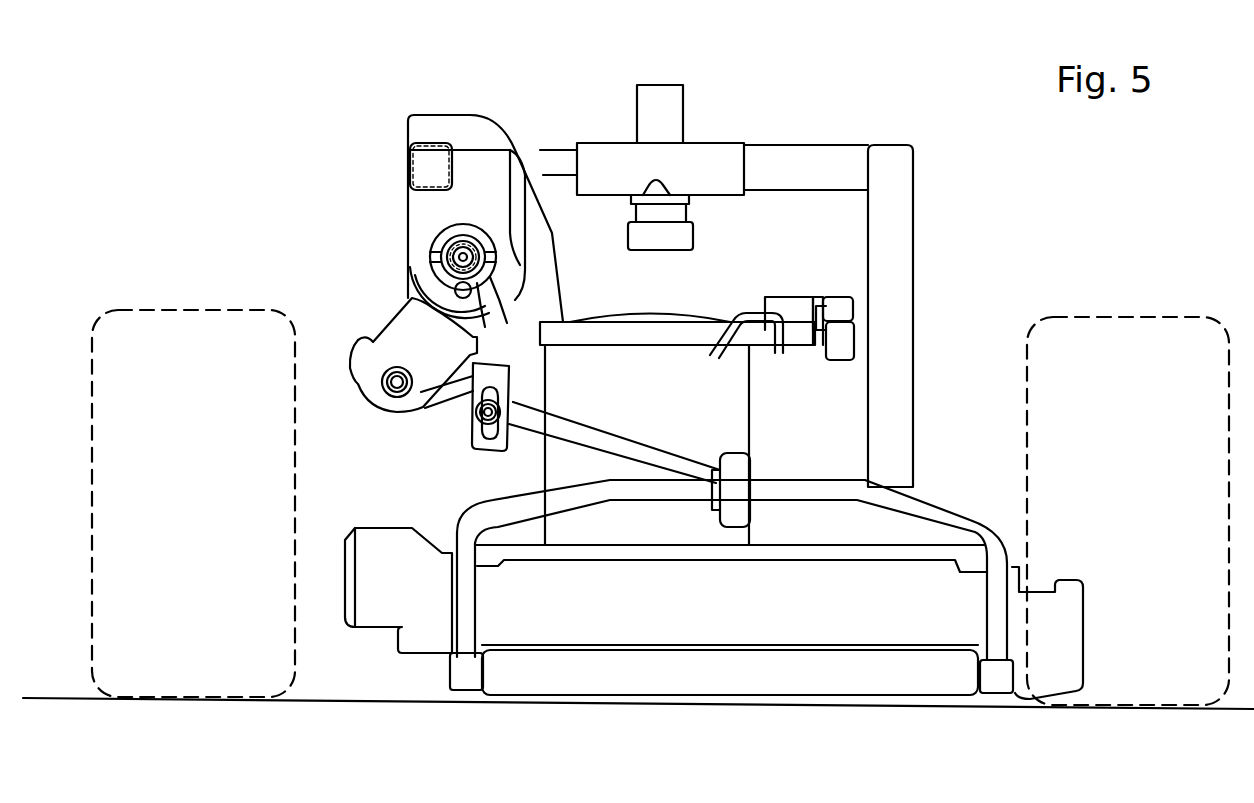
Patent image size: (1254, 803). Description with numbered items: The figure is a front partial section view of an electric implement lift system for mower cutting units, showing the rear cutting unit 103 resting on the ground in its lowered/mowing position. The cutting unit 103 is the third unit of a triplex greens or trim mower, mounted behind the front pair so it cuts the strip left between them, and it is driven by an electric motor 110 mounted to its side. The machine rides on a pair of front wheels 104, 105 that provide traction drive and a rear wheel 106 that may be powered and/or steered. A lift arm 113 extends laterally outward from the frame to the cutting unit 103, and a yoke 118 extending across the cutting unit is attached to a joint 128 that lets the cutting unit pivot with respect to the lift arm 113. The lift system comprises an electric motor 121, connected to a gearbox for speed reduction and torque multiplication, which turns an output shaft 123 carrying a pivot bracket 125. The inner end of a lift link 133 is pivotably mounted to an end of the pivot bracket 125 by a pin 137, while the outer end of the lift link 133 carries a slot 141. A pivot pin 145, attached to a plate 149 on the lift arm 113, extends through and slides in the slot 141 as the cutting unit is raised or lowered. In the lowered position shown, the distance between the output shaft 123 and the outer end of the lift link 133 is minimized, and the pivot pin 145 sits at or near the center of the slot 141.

The cutting unit 103 is at (368, 462).
The front wheel 104 is at (1124, 316).
The front wheel 105 is at (146, 298).
The rear wheel 106 is at (753, 382).
The electric motor 110 is at (374, 620).
The lift arm 113 is at (627, 442).
The yoke 118 is at (943, 510).
The electric motor 121 is at (572, 322).
The output shaft 123 is at (492, 250).
The pivot bracket 125 is at (436, 240).
The joint 128 is at (745, 457).
The lift link 133 is at (505, 315).
The pin 137 is at (470, 288).
The slot 141 is at (490, 458).
The pivot pin 145 is at (513, 401).
The plate 149 is at (420, 318).